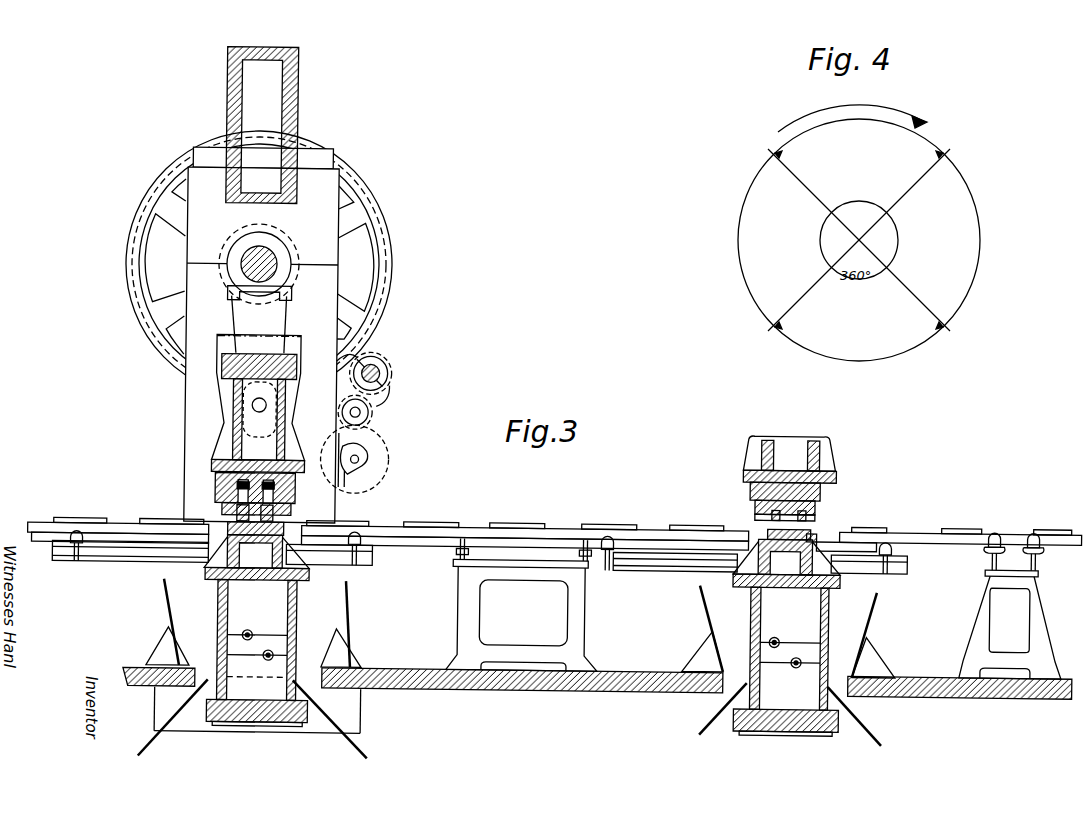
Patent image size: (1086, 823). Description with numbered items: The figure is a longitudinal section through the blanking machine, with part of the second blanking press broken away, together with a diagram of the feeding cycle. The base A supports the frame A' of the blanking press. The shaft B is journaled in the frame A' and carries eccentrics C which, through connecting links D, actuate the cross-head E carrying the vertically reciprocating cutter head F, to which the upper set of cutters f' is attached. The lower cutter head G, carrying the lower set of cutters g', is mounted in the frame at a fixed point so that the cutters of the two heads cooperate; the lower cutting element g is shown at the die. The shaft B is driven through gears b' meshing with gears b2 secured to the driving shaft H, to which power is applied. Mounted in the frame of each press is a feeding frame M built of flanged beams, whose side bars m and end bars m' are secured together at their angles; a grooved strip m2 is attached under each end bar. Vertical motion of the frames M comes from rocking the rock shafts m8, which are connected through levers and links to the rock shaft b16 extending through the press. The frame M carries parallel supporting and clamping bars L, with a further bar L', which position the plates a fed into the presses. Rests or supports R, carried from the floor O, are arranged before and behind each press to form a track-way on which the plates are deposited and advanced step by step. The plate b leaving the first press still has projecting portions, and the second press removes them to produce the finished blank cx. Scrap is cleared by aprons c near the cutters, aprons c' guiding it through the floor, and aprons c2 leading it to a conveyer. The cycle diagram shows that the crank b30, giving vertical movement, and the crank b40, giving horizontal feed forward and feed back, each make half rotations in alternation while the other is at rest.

In FIG. 3, the frame A' is at (262, 284).
In FIG. 3, the eccentrics C is at (284, 254).
In FIG. 3, the shaft B is at (244, 273).
In FIG. 3, the gears b' is at (282, 264).
In FIG. 3, the connecting links D is at (282, 321).
In FIG. 3, the gears b2 is at (388, 356).
In FIG. 3, the driving shaft H is at (382, 374).
In FIG. 3, the cross-head E is at (226, 447).
In FIG. 3, the cutter head F is at (218, 488).
In FIG. 3, the lower set of cutters g' is at (232, 511).
In FIG. 3, the upper set of cutters f' is at (540, 506).
In FIG. 3, the die insert g is at (820, 529).
In FIG. 3, the rests or supports R is at (45, 525).
In FIG. 3, the plates a is at (88, 520).
In FIG. 3, the plate b is at (515, 515).
In FIG. 3, the finished blank cx is at (972, 528).
In FIG. 3, the supporting and clamping bars L is at (105, 537).
In FIG. 3, the guide rail L' is at (588, 552).
In FIG. 3, the feeding frame M is at (57, 556).
In FIG. 3, the side bars m is at (541, 565).
In FIG. 3, the grooved strip m2 is at (902, 590).
In FIG. 3, the end bars m' is at (394, 579).
In FIG. 3, the deflecting and guiding aprons c is at (510, 561).
In FIG. 3, the cutter head G is at (520, 549).
In FIG. 3, the aprons c' is at (521, 628).
In FIG. 3, the rock shafts m8 is at (252, 633).
In FIG. 3, the rock shaft b16 is at (273, 660).
In FIG. 3, the aprons c2 is at (188, 717).
In FIG. 3, the base A is at (523, 673).
In FIG. 3, the floor O is at (500, 687).
In FIG. 4, the crank b40 is at (859, 235).
In FIG. 4, the crank b30 is at (860, 252).